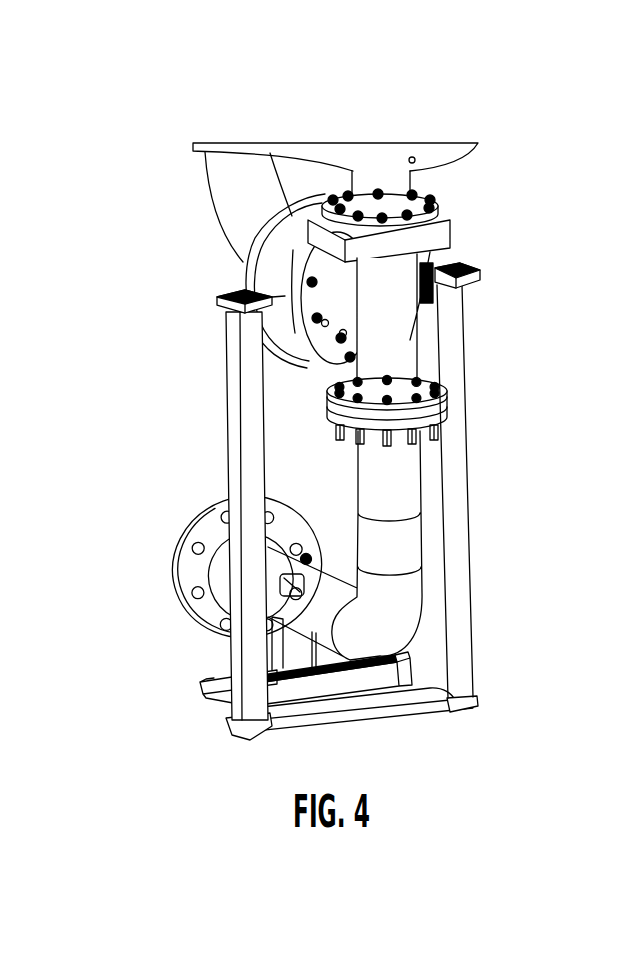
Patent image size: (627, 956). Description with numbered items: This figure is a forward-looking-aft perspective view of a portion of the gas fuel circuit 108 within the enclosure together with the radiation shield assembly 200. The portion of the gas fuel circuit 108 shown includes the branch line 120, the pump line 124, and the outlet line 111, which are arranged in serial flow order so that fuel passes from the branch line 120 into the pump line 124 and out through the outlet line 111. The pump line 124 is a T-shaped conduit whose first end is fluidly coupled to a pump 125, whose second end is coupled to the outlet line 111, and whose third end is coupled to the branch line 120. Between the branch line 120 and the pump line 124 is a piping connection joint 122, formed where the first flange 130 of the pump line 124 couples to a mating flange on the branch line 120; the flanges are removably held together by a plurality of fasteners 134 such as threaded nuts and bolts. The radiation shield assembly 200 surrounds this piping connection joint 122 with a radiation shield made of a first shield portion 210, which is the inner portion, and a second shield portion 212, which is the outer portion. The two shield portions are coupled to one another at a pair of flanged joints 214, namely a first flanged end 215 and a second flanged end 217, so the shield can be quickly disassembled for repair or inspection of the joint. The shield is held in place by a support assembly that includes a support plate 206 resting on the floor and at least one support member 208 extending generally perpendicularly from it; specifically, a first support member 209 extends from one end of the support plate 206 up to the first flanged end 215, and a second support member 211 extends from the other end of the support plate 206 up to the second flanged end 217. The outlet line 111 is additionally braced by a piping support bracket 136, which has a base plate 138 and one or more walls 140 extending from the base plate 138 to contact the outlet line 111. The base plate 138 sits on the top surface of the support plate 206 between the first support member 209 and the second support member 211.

The gas fuel circuit 108 is at (323, 405).
The outlet line 111 is at (403, 543).
The branch line 120 is at (346, 141).
The piping connection joint 122 is at (253, 267).
The pump line 124 is at (385, 320).
The pump 125 is at (415, 162).
The first flange 130 is at (253, 317).
The fasteners 134 is at (307, 296).
The piping support bracket 136 is at (344, 540).
The base plate 138 is at (200, 688).
The walls 140 is at (293, 650).
The radiation shield assembly 200 is at (445, 308).
The support plate 206 is at (441, 712).
The support member 208 is at (344, 512).
The first support member 209 is at (452, 460).
The first shield portion 210 is at (313, 362).
The second support member 211 is at (237, 462).
The second shield portion 212 is at (290, 153).
The flanged joints 214 is at (323, 291).
The first flanged end 215 is at (470, 270).
The second flanged end 217 is at (218, 299).